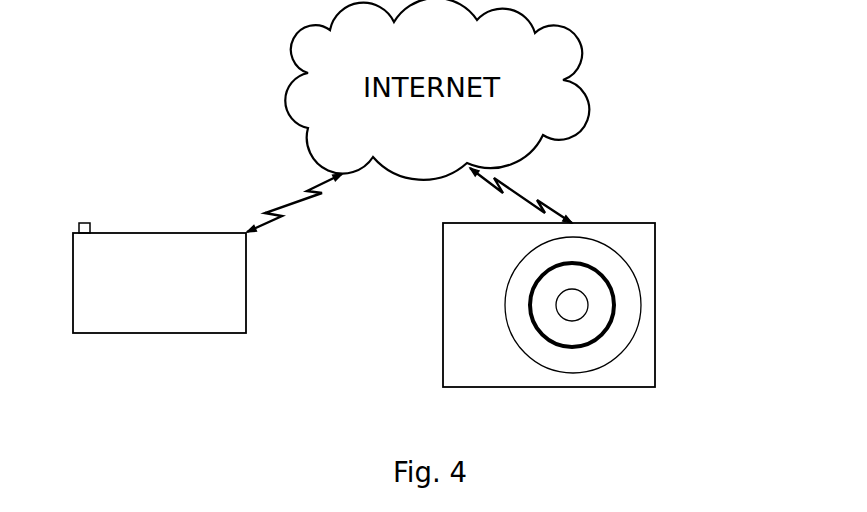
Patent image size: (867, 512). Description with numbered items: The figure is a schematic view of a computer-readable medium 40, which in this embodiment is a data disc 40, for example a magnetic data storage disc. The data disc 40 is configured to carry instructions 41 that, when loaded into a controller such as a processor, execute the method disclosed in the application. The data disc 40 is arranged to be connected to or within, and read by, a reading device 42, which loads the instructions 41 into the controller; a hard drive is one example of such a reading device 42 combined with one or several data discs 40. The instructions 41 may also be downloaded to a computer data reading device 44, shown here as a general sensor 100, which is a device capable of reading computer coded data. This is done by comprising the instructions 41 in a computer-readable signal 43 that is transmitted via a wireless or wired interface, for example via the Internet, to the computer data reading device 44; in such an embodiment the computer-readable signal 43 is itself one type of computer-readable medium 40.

The general sensor 100 is at (159, 278).
The computer data reading device 44 is at (193, 296).
The computer-readable signal 43 is at (317, 202).
The computer-readable medium 40 is at (586, 322).
The instructions 41 is at (558, 347).
The reading device 42 is at (655, 362).